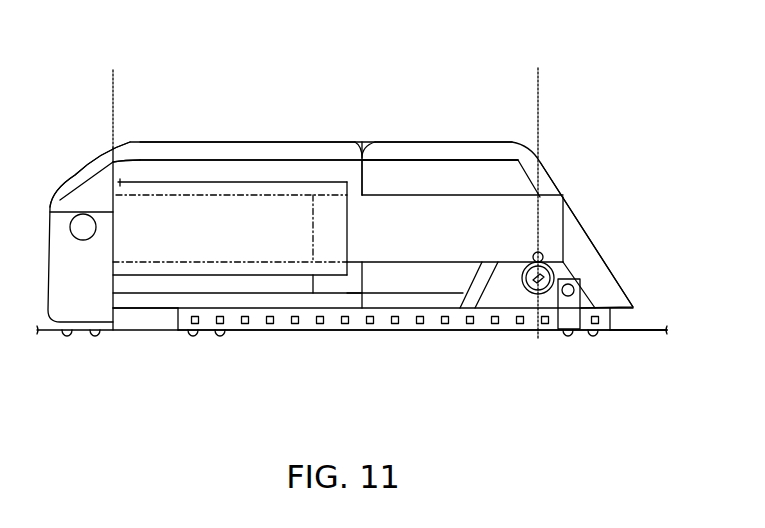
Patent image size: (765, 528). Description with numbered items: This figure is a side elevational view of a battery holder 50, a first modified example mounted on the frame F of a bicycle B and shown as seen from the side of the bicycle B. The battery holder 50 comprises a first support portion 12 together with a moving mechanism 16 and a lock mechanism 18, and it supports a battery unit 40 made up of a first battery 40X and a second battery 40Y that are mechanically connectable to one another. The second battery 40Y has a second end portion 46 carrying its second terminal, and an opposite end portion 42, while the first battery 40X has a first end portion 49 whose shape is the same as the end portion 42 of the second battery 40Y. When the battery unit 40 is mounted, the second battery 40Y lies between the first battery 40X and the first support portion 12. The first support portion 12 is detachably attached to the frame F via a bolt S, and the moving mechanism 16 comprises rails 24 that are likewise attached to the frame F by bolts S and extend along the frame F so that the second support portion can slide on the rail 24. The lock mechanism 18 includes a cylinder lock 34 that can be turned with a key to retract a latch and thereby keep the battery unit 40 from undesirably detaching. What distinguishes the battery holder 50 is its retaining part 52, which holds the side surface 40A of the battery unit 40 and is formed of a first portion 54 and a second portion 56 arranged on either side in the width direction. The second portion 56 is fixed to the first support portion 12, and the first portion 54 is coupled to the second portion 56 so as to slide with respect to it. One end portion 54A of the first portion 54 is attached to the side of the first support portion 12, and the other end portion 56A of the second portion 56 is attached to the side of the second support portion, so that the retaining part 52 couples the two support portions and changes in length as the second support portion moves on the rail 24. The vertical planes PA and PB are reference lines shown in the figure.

The battery holder 50 is at (87, 122).
The first support portion 12 is at (68, 178).
The retaining part 52 is at (230, 182).
The one end portion 54A is at (122, 183).
The battery unit 40 is at (318, 106).
The second battery 40Y is at (330, 142).
The first battery 40X is at (390, 142).
The side surface 40A is at (455, 165).
The second end portion 46 is at (362, 178).
The other end portion 56A is at (533, 256).
The cylinder lock 34 is at (528, 300).
The second portion 56 is at (400, 272).
The rail 24 is at (452, 328).
The first end portion 49 is at (360, 298).
The first portion 54 is at (313, 292).
The end portion 42 is at (118, 325).
The moving mechanism 16 is at (450, 382).
The lock mechanism 18 is at (520, 377).
The bolt S is at (67, 342).
The front reference plane PA is at (113, 95).
The rear reference plane PB is at (538, 191).
The bicycle B is at (640, 272).
The frame F is at (640, 330).